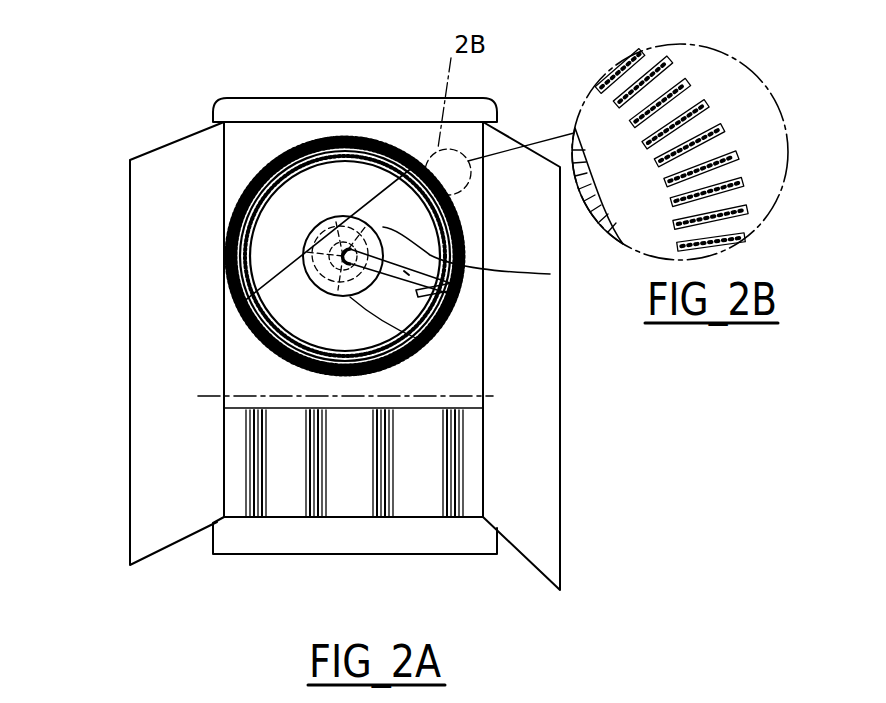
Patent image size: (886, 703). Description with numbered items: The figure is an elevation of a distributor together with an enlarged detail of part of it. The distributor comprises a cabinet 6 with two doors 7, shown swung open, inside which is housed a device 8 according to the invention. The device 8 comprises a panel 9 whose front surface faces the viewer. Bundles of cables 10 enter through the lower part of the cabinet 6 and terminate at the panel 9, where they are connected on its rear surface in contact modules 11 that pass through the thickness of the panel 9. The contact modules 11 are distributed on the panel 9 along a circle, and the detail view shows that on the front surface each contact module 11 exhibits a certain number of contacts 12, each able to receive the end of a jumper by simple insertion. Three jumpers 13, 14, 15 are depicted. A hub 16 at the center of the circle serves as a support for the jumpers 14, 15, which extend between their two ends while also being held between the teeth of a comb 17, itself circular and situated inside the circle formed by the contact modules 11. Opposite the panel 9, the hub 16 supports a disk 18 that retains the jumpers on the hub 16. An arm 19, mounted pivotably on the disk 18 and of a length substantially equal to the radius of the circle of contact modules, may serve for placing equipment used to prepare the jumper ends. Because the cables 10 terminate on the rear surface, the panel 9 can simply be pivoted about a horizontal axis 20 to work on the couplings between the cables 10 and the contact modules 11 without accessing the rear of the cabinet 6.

In FIG. 2A, the cabinet 6 is at (192, 109).
In FIG. 2A, the doors 7 is at (158, 327).
In FIG. 2A, the device 8 is at (467, 141).
In FIG. 2A, the panel 9 is at (455, 378).
In FIG. 2A, the bundles of cables 10 is at (253, 487).
In FIG. 2A, the contact modules 11 is at (268, 352).
In FIG. 2B, the contact modules 11 is at (733, 177).
In FIG. 2B, the contacts 12 is at (712, 158).
In FIG. 2A, the jumper 13 is at (302, 250).
In FIG. 2A, the jumper 14 is at (303, 256).
In FIG. 2A, the jumper 15 is at (363, 217).
In FIG. 2A, the hub 16 is at (550, 274).
In FIG. 2A, the comb 17 is at (245, 318).
In FIG. 2B, the comb 17 is at (580, 130).
In FIG. 2A, the disk 18 is at (313, 222).
In FIG. 2A, the arm 19 is at (450, 291).
In FIG. 2A, the horizontal axis 20 is at (493, 397).